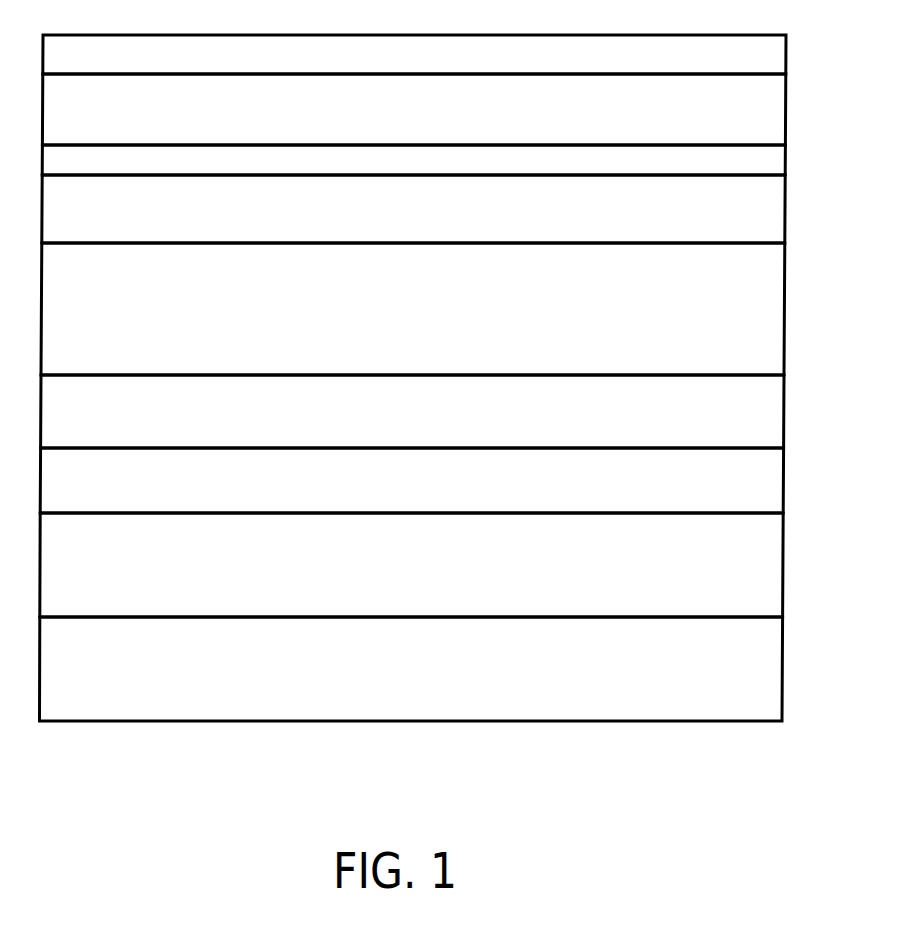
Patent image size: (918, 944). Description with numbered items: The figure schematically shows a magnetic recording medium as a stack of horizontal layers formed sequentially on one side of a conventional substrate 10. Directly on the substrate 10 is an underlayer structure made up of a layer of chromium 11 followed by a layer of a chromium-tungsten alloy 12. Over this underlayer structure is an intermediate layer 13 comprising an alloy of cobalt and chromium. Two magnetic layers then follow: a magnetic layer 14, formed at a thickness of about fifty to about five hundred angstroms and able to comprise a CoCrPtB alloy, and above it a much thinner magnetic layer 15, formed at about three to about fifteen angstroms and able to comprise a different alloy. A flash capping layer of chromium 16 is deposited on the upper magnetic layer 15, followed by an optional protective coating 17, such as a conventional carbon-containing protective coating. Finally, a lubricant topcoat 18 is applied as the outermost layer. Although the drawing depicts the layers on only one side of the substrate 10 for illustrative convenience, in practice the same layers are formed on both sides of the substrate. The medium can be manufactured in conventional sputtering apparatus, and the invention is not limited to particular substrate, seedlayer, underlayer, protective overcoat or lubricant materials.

The substrate 10 is at (782, 667).
The layer of chromium 11 is at (783, 562).
The layer of chromium-tungsten alloy 12 is at (784, 478).
The intermediate layer 13 is at (784, 402).
The magnetic layer 14 is at (784, 308).
The magnetic layer 15 is at (785, 215).
The flash capping layer of chromium 16 is at (786, 162).
The protective coating 17 is at (786, 115).
The lubricant topcoat 18 is at (786, 50).